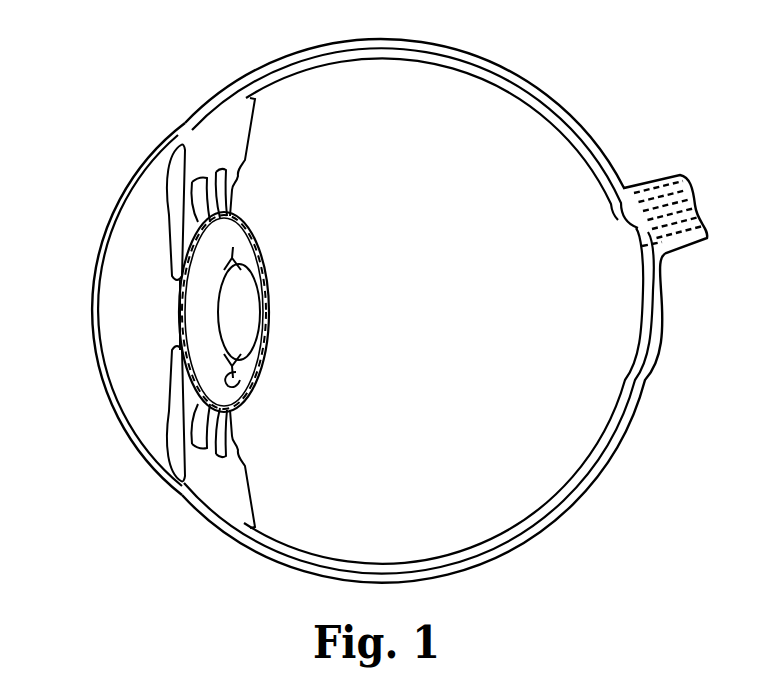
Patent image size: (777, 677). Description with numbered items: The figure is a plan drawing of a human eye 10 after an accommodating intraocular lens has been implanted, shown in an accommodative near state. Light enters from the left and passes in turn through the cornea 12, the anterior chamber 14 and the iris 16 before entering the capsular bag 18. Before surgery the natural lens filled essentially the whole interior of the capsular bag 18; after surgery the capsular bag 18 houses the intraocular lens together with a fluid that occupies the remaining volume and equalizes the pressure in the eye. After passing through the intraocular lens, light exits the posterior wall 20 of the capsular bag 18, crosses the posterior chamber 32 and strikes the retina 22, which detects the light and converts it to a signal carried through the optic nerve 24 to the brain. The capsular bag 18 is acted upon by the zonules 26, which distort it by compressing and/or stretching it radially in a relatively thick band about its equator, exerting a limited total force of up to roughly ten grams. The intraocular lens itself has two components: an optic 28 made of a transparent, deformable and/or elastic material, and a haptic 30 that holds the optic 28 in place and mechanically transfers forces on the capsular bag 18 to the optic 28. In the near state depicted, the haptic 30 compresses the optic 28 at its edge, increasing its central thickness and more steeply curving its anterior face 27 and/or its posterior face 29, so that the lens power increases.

The human eye 10 is at (133, 85).
The cornea 12 is at (96, 268).
The anterior chamber 14 is at (137, 212).
The iris 16 is at (178, 207).
The capsular bag 18 is at (253, 263).
The posterior wall 20 is at (244, 240).
The retina 22 is at (608, 181).
The optic nerve 24 is at (663, 188).
The zonules 26 is at (240, 181).
The anterior face 27 is at (195, 316).
The optic 28 is at (234, 302).
The posterior face 29 is at (262, 316).
The haptic 30 is at (238, 378).
The posterior chamber 32 is at (514, 132).